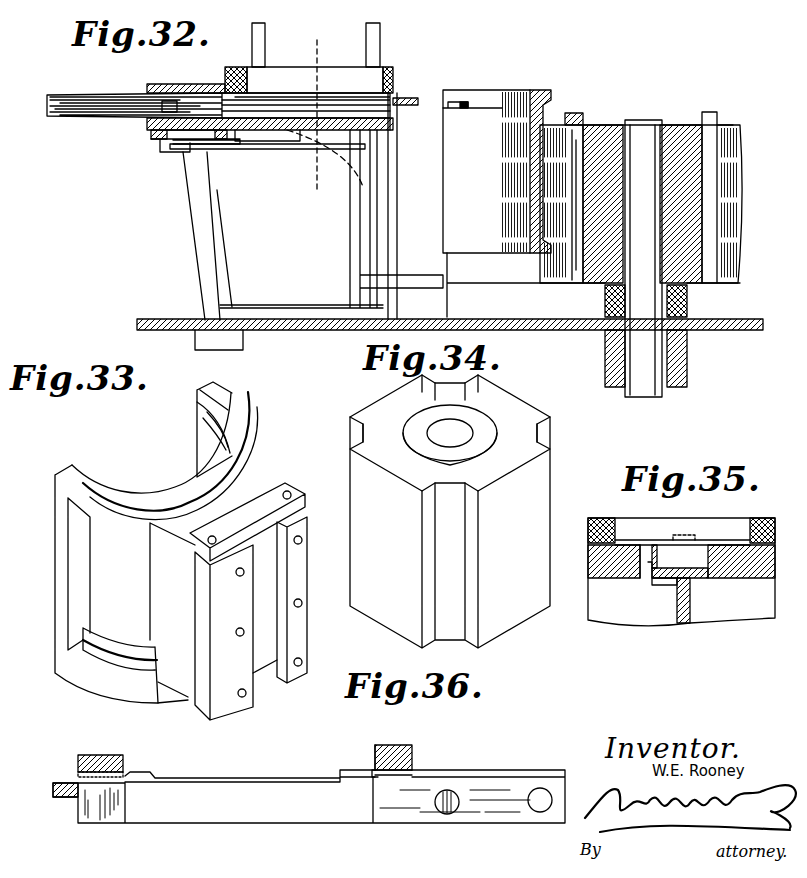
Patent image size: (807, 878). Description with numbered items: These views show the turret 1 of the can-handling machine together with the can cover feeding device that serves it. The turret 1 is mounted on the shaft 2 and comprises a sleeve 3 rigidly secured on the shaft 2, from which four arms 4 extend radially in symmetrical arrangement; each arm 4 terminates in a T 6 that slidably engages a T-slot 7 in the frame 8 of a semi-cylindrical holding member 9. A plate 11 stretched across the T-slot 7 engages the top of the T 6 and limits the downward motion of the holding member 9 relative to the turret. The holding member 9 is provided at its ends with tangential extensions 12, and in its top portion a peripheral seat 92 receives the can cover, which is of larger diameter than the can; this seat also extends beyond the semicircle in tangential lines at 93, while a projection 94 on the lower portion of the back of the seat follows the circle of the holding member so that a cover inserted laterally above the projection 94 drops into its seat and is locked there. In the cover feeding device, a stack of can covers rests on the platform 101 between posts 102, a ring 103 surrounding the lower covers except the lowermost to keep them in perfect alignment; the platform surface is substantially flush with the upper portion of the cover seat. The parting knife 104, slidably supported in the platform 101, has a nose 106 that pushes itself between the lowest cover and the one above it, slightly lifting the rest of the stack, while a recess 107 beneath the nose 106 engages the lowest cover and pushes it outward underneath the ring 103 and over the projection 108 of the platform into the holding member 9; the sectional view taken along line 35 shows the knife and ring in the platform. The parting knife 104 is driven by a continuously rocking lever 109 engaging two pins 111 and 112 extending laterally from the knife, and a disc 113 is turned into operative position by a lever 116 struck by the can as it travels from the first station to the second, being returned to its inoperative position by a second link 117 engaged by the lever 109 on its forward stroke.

In FIG. 34, the turret 1 is at (488, 400).
In FIG. 32, the shaft 2 is at (647, 137).
In FIG. 32, the sleeve 3 is at (646, 336).
In FIG. 34, the sleeve 3 is at (478, 425).
In FIG. 32, the arms 4 is at (603, 132).
In FIG. 34, the arms 4 is at (565, 447).
In FIG. 32, the T 6 is at (578, 136).
In FIG. 34, the T 6 is at (368, 528).
In FIG. 33, the T-slot 7 is at (270, 625).
In FIG. 34, the T-slot 7 is at (310, 615).
In FIG. 33, the frame 8 is at (185, 683).
In FIG. 32, the holding member 9 is at (502, 95).
In FIG. 33, the holding member 9 is at (104, 490).
In FIG. 32, the plate 11 is at (577, 120).
In FIG. 33, the plate 11 is at (265, 500).
In FIG. 33, the tangential extensions 12 is at (72, 467).
In FIG. 32, the section line 35— 35 is at (316, 115).
In FIG. 33, the peripheral seat 92 is at (232, 416).
In FIG. 33, the tangential extension of the seat 93 is at (205, 398).
In FIG. 33, the projection 94 is at (228, 418).
In FIG. 32, the platform 101 is at (282, 112).
In FIG. 32, the posts 102 is at (263, 48).
In FIG. 32, the ring 103 is at (300, 68).
In FIG. 35, the ring 103 is at (684, 519).
In FIG. 36, the ring 103 is at (122, 755).
In FIG. 32, the parting knife 104 is at (117, 96).
In FIG. 35, the parting knife 104 is at (691, 575).
In FIG. 36, the parting knife 104 is at (488, 805).
In FIG. 32, the nose 106 is at (246, 90).
In FIG. 35, the nose 106 is at (690, 535).
In FIG. 36, the nose 106 is at (377, 750).
In FIG. 32, the recess 107 is at (247, 110).
In FIG. 35, the recess 107 is at (660, 540).
In FIG. 36, the recess 107 is at (413, 770).
In FIG. 32, the projection of the platform 108 is at (400, 100).
In FIG. 32, the rocking lever 109 is at (188, 214).
In FIG. 32, the pin 111 is at (209, 110).
In FIG. 32, the pin 112 is at (167, 110).
In FIG. 32, the disc 113 is at (160, 139).
In FIG. 32, the lever 116 is at (203, 154).
In FIG. 32, the second link 117 is at (248, 150).